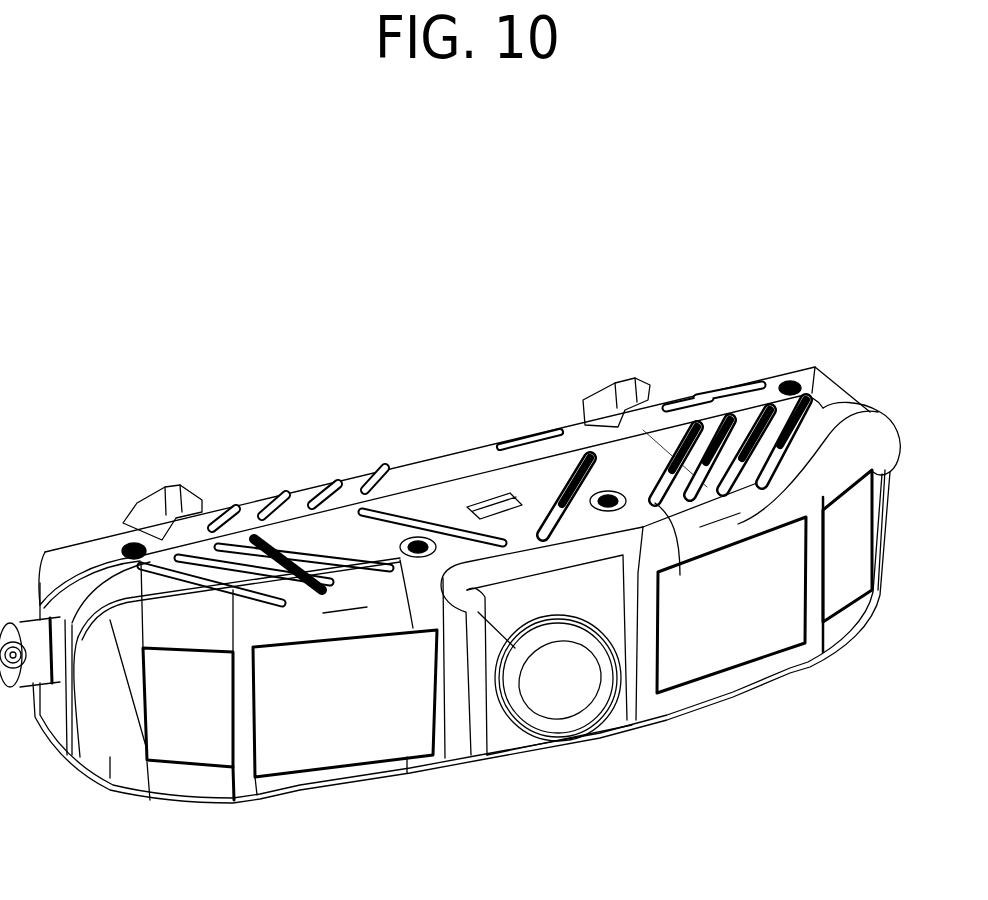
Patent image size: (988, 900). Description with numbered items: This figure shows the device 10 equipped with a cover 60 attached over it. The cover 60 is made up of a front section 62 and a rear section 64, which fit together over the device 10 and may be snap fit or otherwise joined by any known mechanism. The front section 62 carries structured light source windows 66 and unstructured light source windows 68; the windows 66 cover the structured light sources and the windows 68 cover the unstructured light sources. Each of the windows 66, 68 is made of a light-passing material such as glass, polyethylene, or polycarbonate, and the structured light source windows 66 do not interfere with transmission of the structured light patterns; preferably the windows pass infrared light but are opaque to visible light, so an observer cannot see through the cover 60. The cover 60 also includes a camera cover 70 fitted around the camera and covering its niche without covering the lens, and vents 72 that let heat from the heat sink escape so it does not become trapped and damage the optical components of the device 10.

The device 10 is at (480, 434).
The cover 60 is at (400, 454).
The front section 62 is at (453, 743).
The rear section 64 is at (118, 540).
The structured light source windows 66 is at (193, 738).
The unstructured light source windows 68 is at (340, 720).
The camera cover 70 is at (507, 740).
The vents 72 is at (693, 395).